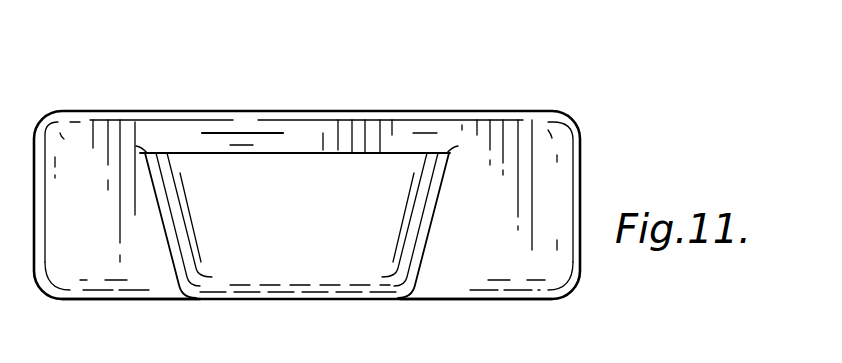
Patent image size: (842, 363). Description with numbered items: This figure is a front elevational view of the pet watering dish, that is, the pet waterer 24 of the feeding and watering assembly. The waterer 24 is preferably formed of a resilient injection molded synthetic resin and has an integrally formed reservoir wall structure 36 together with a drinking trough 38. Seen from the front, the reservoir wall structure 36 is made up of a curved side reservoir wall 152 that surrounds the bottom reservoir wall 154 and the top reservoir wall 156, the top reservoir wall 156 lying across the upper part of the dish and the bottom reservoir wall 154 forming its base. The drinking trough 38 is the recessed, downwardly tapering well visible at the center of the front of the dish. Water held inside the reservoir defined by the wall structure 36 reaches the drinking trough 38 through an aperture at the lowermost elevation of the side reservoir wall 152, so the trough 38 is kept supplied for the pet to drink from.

The pet waterer 24 is at (401, 95).
The reservoir wall structure 36 is at (224, 95).
The top reservoir wall 156 is at (263, 111).
The drinking trough 38 is at (335, 227).
The bottom reservoir wall 154 is at (165, 296).
The side reservoir wall 152 is at (465, 252).